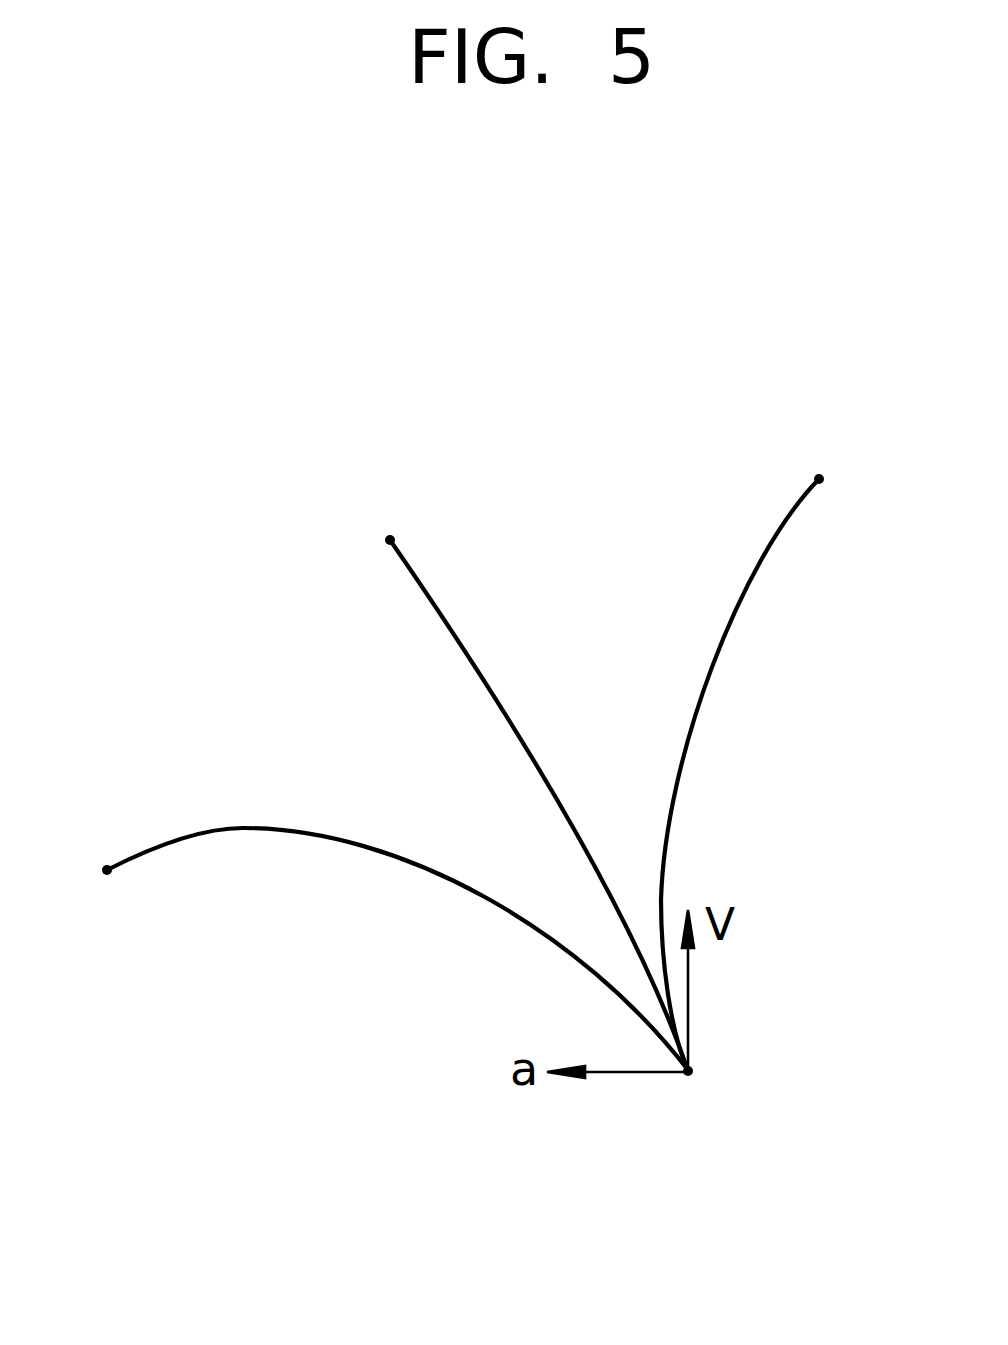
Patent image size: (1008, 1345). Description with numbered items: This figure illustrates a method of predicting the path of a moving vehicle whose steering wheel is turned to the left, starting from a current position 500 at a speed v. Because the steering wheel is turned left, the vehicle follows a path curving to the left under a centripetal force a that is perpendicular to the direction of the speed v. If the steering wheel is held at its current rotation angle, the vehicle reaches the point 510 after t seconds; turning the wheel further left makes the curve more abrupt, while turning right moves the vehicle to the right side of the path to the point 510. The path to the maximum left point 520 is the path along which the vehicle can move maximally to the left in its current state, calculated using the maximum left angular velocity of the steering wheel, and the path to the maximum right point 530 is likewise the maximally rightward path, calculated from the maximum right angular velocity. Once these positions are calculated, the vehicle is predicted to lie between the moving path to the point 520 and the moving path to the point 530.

The current position 500 is at (688, 1071).
The point 510 is at (391, 540).
The maximum left point 520 is at (107, 870).
The maximum right point 530 is at (819, 479).